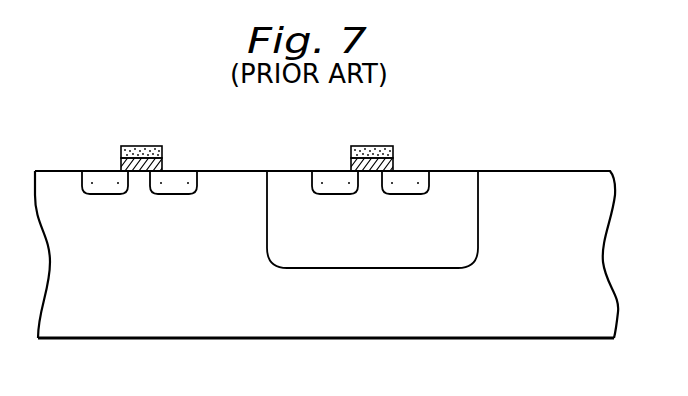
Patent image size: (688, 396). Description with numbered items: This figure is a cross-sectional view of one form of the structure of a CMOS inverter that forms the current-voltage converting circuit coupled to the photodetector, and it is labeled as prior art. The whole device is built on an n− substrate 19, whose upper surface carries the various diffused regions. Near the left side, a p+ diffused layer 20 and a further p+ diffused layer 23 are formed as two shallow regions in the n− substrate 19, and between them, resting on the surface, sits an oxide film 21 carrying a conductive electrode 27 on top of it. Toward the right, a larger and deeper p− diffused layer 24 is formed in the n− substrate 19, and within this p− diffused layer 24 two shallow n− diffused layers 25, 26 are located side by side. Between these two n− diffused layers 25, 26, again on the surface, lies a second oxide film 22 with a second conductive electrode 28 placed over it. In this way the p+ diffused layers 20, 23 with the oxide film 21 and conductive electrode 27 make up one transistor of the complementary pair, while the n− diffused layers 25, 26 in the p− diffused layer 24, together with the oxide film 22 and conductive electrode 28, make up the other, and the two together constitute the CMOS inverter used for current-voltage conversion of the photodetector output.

The n− substrate 19 is at (535, 186).
The p+ diffused layer 20 is at (102, 181).
The oxide film 21 is at (148, 165).
The oxide film 22 is at (383, 165).
The p+ diffused layer 23 is at (182, 181).
The p− diffused layer 24 is at (283, 181).
The n− diffused layer 25 is at (328, 181).
The n− diffused layer 26 is at (410, 181).
The conductive electrode 27 is at (132, 151).
The conductive electrode 28 is at (362, 151).